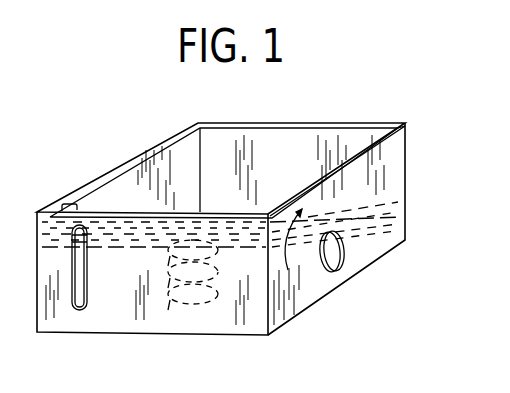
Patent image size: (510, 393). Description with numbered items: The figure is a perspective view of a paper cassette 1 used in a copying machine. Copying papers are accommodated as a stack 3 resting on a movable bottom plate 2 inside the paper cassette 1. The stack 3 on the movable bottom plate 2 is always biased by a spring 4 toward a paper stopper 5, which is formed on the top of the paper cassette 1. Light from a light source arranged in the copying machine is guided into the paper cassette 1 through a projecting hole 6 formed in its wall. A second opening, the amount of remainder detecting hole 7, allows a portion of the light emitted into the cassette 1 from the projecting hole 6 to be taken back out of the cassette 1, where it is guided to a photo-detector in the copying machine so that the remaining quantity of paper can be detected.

The paper cassette 1 is at (398, 143).
The movable bottom plate 2 is at (378, 220).
The stack 3 is at (381, 200).
The spring 4 is at (222, 292).
The paper stopper 5 is at (76, 207).
The projecting hole 6 is at (343, 251).
The amount of remainder detecting hole 7 is at (88, 284).